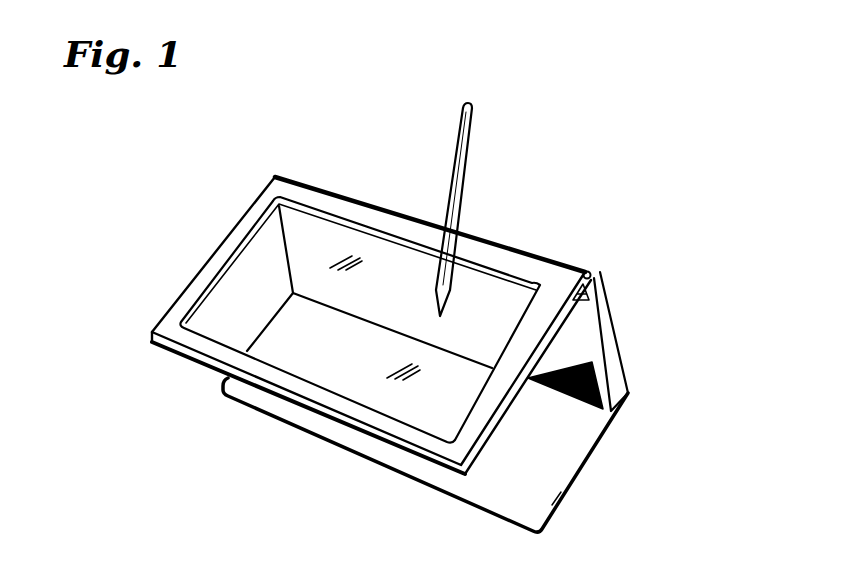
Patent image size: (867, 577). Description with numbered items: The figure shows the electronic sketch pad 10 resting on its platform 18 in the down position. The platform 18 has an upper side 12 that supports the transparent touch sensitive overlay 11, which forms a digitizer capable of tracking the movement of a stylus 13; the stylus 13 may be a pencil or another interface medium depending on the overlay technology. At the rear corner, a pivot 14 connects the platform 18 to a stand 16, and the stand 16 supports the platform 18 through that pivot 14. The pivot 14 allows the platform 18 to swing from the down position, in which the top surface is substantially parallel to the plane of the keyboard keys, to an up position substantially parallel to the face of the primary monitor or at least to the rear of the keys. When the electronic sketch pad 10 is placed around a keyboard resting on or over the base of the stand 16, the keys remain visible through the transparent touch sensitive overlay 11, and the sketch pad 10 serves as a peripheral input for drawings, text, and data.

The electronic sketch pad 10 is at (195, 275).
The transparent touch sensitive overlay 11 is at (262, 262).
The upper side 12 is at (313, 203).
The stylus 13 is at (465, 187).
The pivot 14 is at (593, 270).
The stand 16 is at (610, 378).
The platform 18 is at (195, 358).